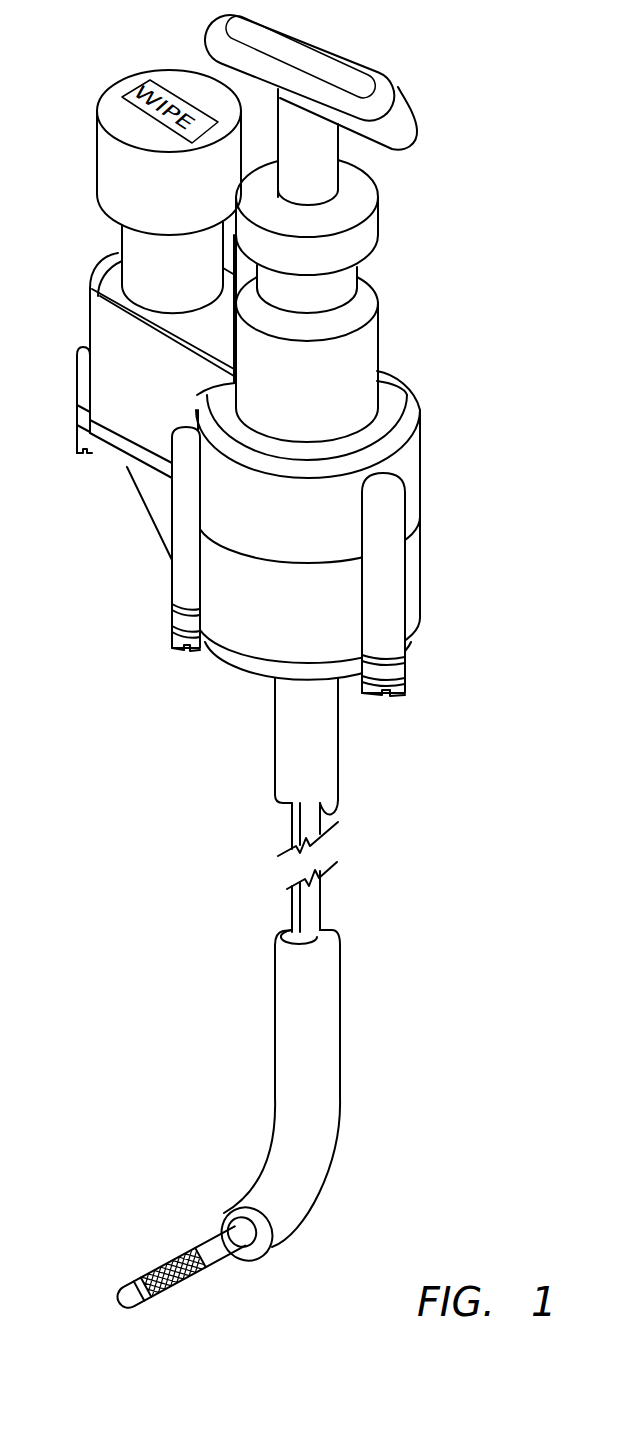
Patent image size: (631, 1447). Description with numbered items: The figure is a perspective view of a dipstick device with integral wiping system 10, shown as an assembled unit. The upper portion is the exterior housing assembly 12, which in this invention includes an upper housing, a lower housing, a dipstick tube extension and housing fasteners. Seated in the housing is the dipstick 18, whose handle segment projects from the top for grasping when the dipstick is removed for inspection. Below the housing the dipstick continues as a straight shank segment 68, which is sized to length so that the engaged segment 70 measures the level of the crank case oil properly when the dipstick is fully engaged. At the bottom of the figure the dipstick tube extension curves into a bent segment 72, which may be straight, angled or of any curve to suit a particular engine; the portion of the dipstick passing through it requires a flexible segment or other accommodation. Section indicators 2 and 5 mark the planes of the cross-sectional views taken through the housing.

The section line 2- 2 is at (41, 49).
The section line 5- 5 is at (7, 447).
The dipstick device with integral wiping system 10 is at (442, 425).
The exterior housing assembly 12 is at (150, 591).
The dipstick 18 is at (410, 72).
The straight shank segment 68 is at (292, 825).
The bent segment 70 is at (159, 1266).
The bent segment 72 is at (251, 1184).